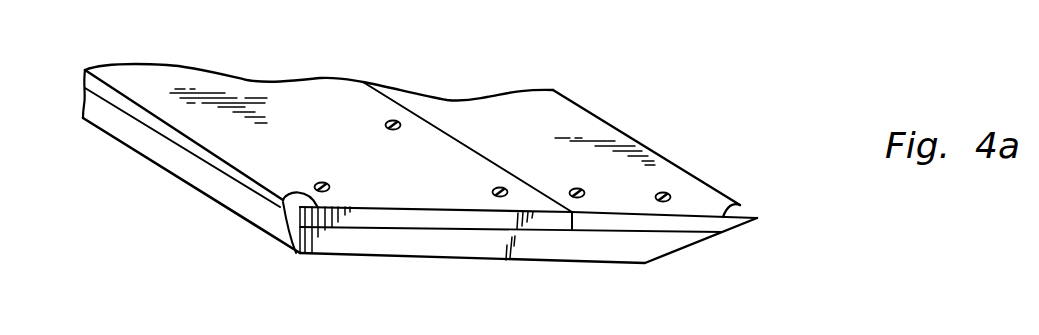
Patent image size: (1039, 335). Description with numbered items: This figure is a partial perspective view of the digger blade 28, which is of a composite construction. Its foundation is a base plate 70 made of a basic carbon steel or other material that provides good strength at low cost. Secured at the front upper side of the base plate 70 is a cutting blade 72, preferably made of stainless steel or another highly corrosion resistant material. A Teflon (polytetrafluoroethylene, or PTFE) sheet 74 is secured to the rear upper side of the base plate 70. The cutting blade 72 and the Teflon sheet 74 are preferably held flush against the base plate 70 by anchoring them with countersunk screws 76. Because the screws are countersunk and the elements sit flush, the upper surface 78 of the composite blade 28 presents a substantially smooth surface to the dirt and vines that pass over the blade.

The digger blade 28 is at (98, 164).
The base plate 70 is at (392, 255).
The cutting blade 72 is at (610, 126).
The Teflon sheet 74 is at (143, 72).
The countersunk screws 76 is at (320, 182).
The upper surface 78 is at (284, 202).